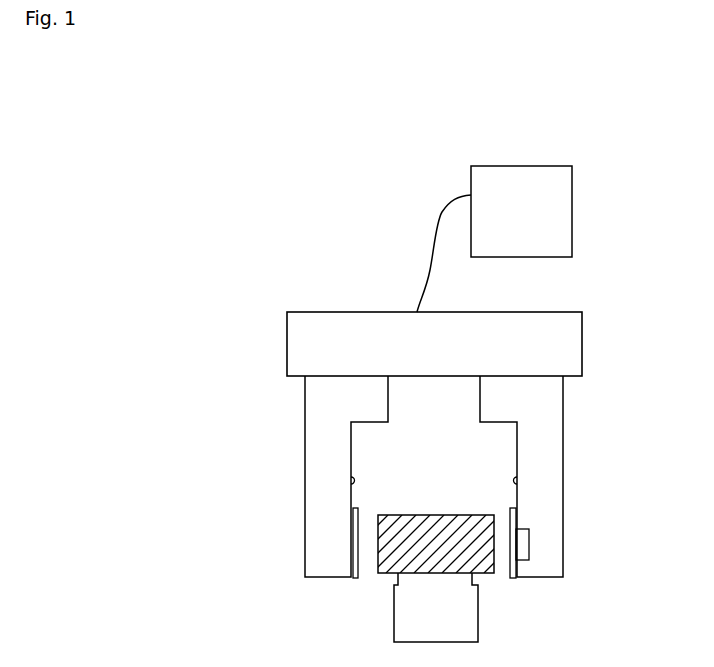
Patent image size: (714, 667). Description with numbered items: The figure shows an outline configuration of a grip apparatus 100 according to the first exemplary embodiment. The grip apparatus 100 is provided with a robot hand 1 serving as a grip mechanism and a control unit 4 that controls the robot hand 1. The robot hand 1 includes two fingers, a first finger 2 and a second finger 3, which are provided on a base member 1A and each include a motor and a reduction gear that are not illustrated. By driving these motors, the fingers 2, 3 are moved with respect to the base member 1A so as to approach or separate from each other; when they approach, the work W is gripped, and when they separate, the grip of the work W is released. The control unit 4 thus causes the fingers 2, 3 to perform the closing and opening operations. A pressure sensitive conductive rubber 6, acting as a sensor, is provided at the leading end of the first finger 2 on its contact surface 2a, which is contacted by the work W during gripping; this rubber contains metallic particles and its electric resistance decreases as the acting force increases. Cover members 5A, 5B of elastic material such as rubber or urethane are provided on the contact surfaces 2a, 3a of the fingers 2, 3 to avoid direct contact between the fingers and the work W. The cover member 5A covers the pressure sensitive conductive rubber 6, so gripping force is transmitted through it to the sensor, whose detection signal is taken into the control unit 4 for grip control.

The grip apparatus 100 is at (545, 130).
The robot hand 1 is at (280, 300).
The base member 1A is at (582, 342).
The first finger 2 is at (563, 436).
The second finger 3 is at (305, 437).
The contact surface 2a is at (517, 483).
The contact surface 3a is at (351, 483).
The control unit 4 is at (572, 212).
The cover member 5A is at (514, 579).
The cover member 5B is at (357, 579).
The pressure sensitive conductive rubber 6 is at (529, 541).
The work W is at (443, 515).